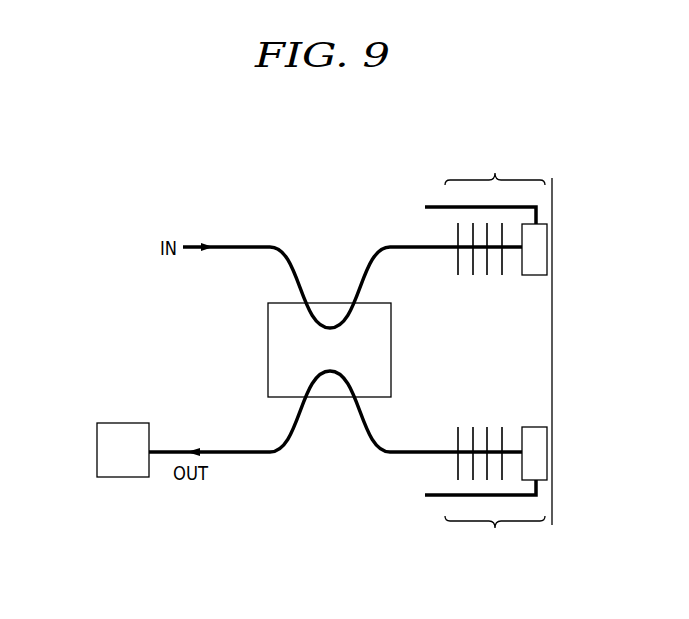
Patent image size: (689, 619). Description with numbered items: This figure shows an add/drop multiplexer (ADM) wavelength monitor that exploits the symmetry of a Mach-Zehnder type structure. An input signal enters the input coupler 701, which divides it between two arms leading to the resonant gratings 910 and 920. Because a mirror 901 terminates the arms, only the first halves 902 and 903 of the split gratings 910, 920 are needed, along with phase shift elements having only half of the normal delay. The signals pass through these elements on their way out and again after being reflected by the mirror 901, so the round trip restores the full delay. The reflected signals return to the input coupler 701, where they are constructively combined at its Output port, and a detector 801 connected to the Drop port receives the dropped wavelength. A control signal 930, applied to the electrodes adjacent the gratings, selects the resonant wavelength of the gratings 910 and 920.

The input coupler 701 is at (268, 347).
The detector 801 is at (97, 448).
The mirror 901 is at (553, 352).
The first half of split grating 902 is at (481, 278).
The first half of split grating / phase shift element 903 is at (537, 278).
The resonant grating 910 is at (495, 164).
The resonant grating 920 is at (495, 541).
The control signal 930 is at (461, 352).